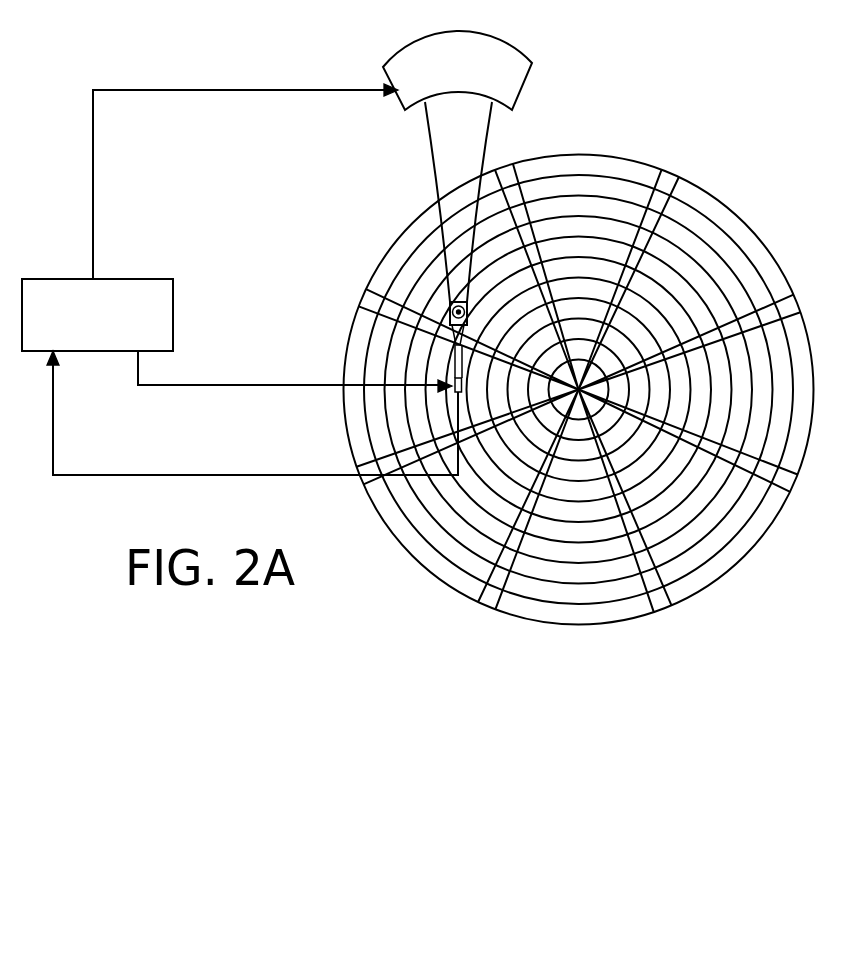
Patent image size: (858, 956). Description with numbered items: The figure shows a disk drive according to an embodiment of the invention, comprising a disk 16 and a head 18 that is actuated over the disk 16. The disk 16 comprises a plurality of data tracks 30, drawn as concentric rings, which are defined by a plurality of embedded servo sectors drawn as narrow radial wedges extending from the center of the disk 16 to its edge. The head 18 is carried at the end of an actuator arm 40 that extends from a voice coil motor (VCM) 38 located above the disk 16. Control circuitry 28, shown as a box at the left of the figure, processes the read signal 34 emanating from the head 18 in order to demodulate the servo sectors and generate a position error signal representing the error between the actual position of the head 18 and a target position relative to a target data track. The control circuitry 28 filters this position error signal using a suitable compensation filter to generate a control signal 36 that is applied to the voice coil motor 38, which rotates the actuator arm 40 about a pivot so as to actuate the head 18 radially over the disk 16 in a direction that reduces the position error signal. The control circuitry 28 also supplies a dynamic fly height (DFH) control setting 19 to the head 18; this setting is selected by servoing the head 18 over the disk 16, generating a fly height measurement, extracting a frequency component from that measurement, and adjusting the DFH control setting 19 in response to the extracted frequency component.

The disk 16 is at (736, 212).
The head 18 is at (453, 393).
The dynamic fly height (DFH) control setting 19 is at (254, 385).
The control circuitry 28 is at (138, 279).
The data tracks 30 is at (585, 180).
The read signal 34 is at (226, 475).
The control signal 36 is at (92, 175).
The voice coil motor (VCM) 38 is at (398, 102).
The actuator arm 40 is at (440, 185).